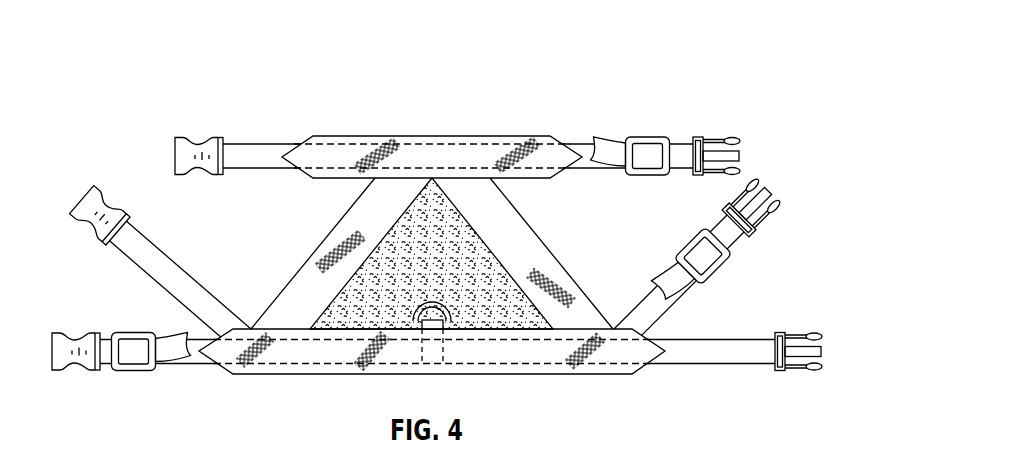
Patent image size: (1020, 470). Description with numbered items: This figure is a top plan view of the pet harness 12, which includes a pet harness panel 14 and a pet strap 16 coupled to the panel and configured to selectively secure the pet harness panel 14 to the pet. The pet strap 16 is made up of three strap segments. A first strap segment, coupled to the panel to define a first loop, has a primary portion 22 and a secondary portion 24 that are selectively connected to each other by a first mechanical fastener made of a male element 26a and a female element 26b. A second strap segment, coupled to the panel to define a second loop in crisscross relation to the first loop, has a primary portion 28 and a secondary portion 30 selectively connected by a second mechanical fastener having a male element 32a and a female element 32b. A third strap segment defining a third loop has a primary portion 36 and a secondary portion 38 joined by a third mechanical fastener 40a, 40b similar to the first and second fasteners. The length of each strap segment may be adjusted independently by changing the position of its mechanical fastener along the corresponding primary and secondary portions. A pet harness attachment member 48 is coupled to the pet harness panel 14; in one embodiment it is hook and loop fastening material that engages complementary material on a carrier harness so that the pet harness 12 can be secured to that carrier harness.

The pet harness 12 is at (653, 57).
The pet harness panel 14 is at (480, 263).
The pet strap 16 is at (270, 147).
The primary portion 22 is at (664, 300).
The secondary portion 24 is at (254, 157).
The male element 26a is at (757, 216).
The female element 26b is at (201, 139).
The primary portion 28 is at (185, 284).
The secondary portion 30 is at (577, 142).
The male element 32a is at (87, 199).
The female element 32b is at (715, 137).
The primary portion 36 is at (688, 357).
The secondary portion 38 is at (195, 357).
The third mechanical fastener element 40a is at (798, 368).
The third mechanical fastener element 40b is at (67, 365).
The pet harness attachment member 48 is at (400, 243).